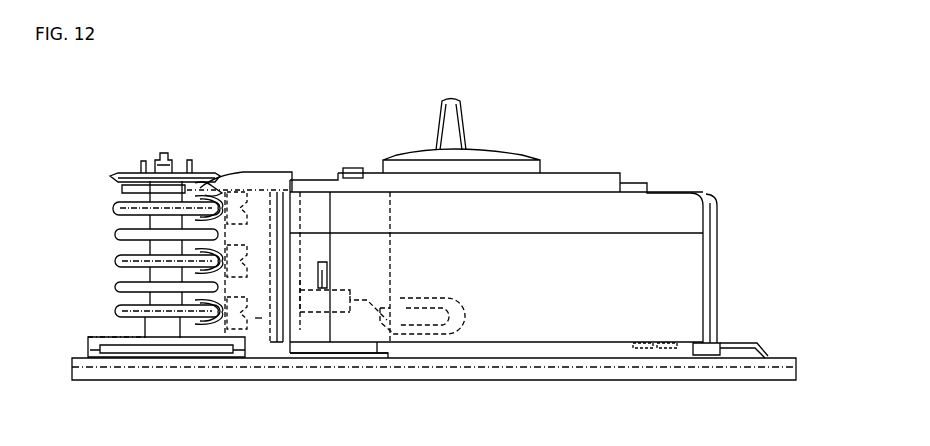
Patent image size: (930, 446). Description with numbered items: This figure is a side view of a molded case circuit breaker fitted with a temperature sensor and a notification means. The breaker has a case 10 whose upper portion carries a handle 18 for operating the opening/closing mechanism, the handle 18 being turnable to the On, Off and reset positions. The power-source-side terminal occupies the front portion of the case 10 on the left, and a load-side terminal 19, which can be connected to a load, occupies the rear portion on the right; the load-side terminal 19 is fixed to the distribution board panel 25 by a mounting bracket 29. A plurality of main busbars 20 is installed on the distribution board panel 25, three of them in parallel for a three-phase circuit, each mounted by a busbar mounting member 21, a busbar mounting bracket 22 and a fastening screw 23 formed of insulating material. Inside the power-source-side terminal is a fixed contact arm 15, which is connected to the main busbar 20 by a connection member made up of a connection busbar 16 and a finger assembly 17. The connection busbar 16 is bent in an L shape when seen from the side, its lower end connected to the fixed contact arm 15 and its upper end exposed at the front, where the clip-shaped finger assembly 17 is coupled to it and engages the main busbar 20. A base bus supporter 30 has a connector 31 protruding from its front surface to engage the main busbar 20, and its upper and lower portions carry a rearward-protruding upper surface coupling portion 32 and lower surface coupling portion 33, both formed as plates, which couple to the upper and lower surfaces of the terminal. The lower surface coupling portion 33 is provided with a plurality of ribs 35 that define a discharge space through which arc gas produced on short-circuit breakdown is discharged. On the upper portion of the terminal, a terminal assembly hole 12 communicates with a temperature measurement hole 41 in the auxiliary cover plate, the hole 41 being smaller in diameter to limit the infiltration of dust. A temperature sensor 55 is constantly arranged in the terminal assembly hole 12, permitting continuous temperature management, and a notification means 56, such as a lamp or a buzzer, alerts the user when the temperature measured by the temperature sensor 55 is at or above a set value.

The case 10 is at (586, 174).
The terminal assembly hole 12 is at (317, 212).
The fixed contact arm 15 is at (435, 328).
The connection busbar 16 is at (260, 320).
The finger assembly 17 is at (200, 327).
The handle 18 is at (452, 100).
The load-side terminal 19 is at (697, 267).
The main busbar 20 is at (117, 313).
The busbar mounting member 21 is at (115, 178).
The busbar mounting bracket 22 is at (142, 163).
The fastening screw 23 is at (165, 153).
The distribution board panel 25 is at (788, 360).
The mounting bracket 29 is at (765, 348).
The base bus supporter 30 is at (233, 173).
The connector 31 is at (187, 190).
The upper surface coupling portion 32 is at (266, 190).
The lower surface coupling portion 33 is at (313, 357).
The rib 35 is at (363, 330).
The temperature measurement hole 41 is at (315, 185).
The temperature sensor 55 is at (325, 288).
The notification means 56 is at (352, 167).